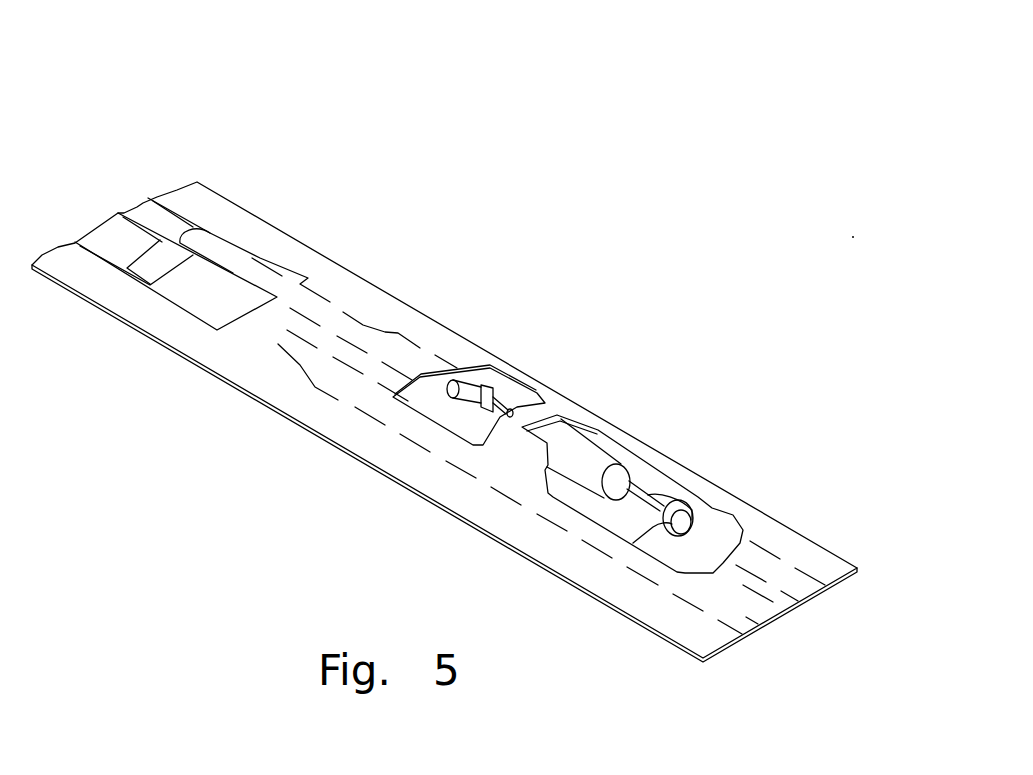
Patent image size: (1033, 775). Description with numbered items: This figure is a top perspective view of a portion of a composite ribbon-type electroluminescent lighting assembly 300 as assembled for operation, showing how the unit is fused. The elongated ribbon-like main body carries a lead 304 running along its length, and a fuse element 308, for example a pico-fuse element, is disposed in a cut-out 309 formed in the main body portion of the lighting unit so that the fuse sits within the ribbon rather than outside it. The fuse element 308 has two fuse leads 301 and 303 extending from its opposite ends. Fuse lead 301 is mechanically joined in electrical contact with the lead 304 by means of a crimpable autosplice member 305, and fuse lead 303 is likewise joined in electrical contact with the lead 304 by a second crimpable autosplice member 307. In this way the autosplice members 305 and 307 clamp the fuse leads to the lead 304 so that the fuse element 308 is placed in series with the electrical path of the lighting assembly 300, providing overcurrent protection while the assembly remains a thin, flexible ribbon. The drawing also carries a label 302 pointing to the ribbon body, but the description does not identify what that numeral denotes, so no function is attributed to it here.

The composite ribbon-type electroluminescent lighting assembly 300 is at (558, 116).
The fuse lead 301 is at (497, 407).
The strip 302 is at (238, 384).
The fuse lead 303 is at (637, 493).
The lead 304 is at (762, 625).
The crimpable autosplice member 305 is at (468, 382).
The crimpable autosplice member 307 is at (687, 518).
The fuse element 308 is at (570, 443).
The cut-out 309 is at (610, 450).